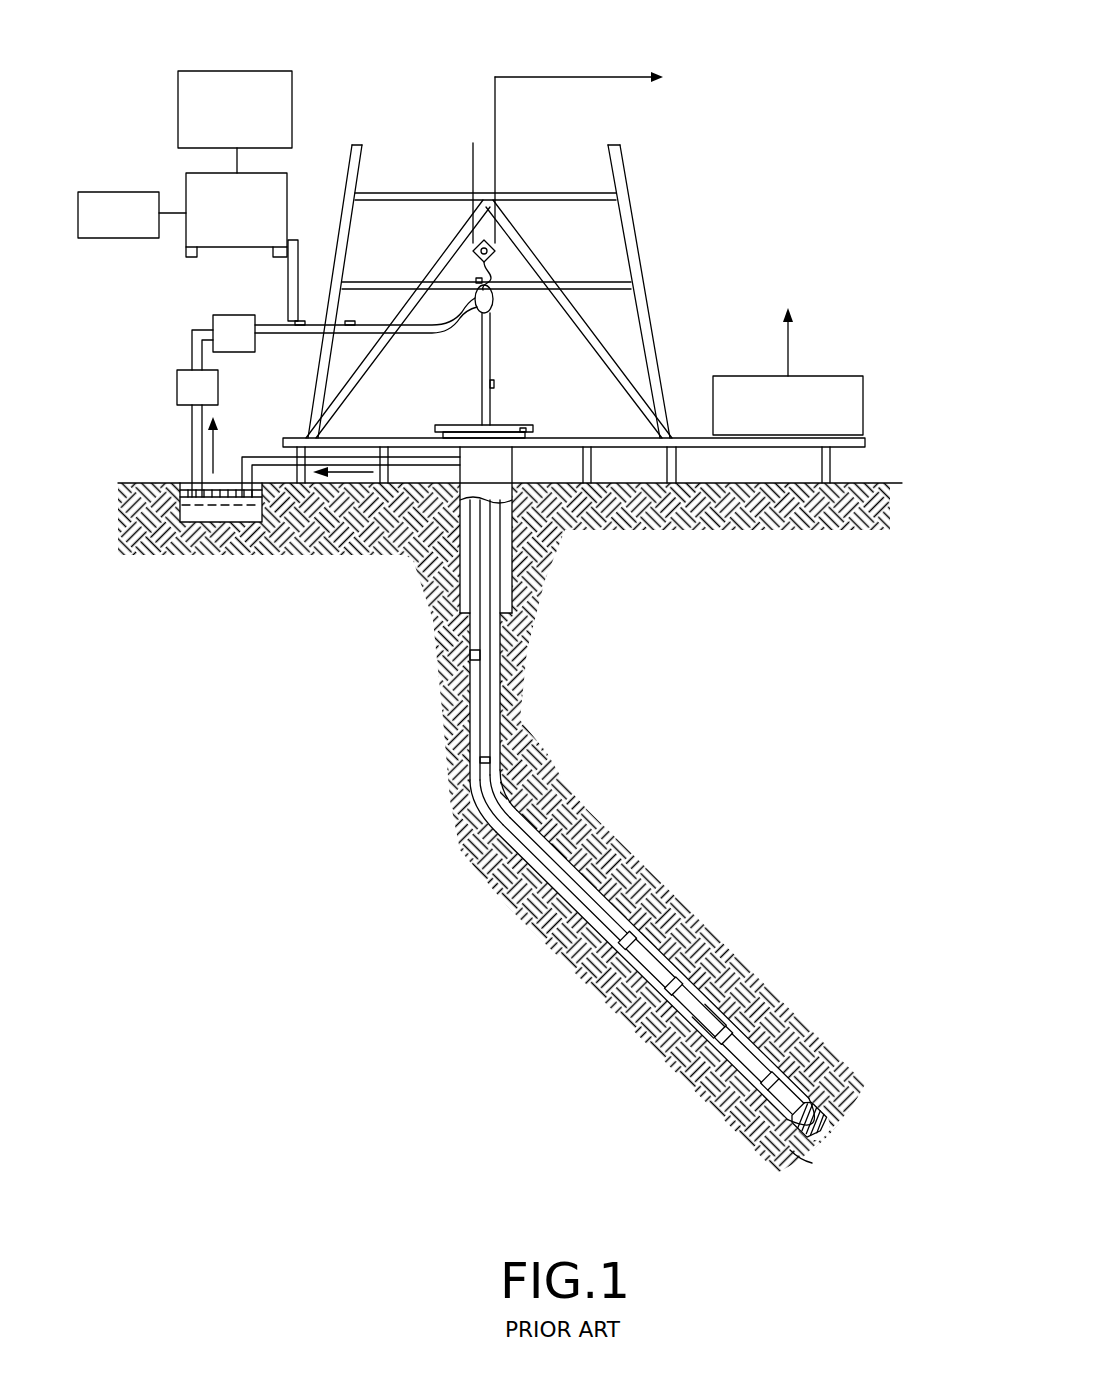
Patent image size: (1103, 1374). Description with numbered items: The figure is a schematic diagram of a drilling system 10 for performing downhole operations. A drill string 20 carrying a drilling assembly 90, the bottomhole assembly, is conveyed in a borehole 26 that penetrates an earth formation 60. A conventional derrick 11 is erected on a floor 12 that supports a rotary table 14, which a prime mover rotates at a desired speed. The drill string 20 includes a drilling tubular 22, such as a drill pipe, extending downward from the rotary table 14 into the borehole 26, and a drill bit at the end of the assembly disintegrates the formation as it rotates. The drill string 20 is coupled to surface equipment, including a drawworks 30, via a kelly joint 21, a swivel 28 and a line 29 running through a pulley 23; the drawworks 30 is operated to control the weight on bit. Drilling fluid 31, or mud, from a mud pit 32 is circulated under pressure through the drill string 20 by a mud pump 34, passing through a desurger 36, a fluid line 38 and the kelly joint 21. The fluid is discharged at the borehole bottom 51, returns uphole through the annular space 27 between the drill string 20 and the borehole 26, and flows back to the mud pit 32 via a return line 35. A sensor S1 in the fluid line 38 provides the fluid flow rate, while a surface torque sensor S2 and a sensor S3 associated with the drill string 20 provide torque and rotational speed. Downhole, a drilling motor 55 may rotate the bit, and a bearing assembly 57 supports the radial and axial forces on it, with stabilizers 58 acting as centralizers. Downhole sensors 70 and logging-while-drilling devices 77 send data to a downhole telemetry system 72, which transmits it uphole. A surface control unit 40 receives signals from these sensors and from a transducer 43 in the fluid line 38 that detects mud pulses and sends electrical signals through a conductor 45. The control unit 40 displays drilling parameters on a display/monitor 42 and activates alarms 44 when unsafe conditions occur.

The drilling system 10 is at (405, 100).
The derrick 11 is at (642, 294).
The floor 12 is at (663, 437).
The rotary table 14 is at (507, 423).
The drill string 20 is at (498, 630).
The kelly joint 21 is at (493, 363).
The drilling tubular 22 is at (468, 680).
The pulley 23 is at (493, 253).
The borehole 26 is at (502, 788).
The annular space 27 is at (523, 817).
The swivel 28 is at (473, 307).
The line 29 is at (497, 170).
The drawworks 30 is at (845, 375).
The drilling fluid 31 is at (192, 508).
The mud pit 32 is at (248, 507).
The mud pump 34 is at (177, 387).
The return line 35 is at (425, 463).
The desurger 36 is at (222, 315).
The fluid line 38 is at (307, 337).
The surface control unit 40 is at (186, 173).
The display/monitor 42 is at (207, 71).
The transducer 43 is at (297, 300).
The alarms 44 is at (137, 238).
The conductor 45 is at (293, 240).
The borehole bottom 51 is at (800, 1157).
The drilling motor 55 is at (648, 908).
The bearing assembly 57 is at (738, 1106).
The stabilizers 58 is at (652, 947).
The earth formation 60 is at (336, 872).
The downhole sensors 70 is at (513, 865).
The downhole telemetry system 72 is at (482, 750).
The logging-while-drilling devices 77 is at (557, 908).
The drilling assembly 90 is at (612, 868).
The sensor S1 is at (348, 321).
The surface torque sensor S2 is at (488, 382).
The sensor S3 is at (533, 422).